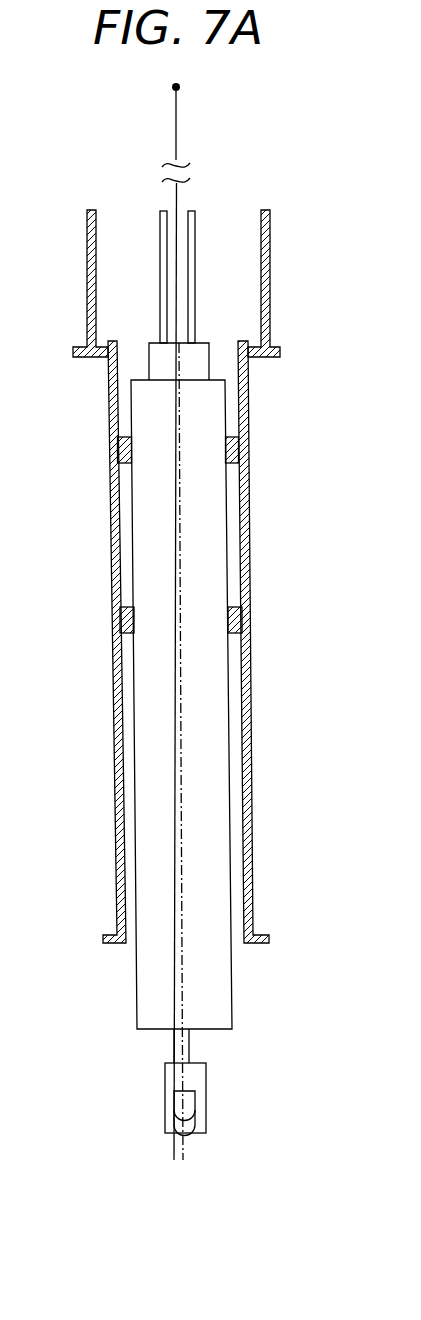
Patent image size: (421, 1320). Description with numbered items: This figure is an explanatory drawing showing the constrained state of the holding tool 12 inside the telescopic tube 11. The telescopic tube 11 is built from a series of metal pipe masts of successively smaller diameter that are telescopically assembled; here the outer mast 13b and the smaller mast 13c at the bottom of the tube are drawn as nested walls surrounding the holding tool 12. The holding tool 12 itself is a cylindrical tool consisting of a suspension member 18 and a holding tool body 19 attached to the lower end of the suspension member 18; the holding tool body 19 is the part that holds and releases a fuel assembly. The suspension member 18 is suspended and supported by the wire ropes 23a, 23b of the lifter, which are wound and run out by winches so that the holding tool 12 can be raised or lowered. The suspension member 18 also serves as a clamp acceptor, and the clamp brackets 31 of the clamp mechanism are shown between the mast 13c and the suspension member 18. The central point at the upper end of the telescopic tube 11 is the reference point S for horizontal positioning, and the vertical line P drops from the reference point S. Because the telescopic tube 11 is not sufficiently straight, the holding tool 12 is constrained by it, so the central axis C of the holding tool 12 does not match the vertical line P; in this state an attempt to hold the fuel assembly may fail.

The reference point S is at (180, 87).
The vertical line P is at (174, 794).
The central axis C is at (186, 982).
The telescopic tube 11 is at (300, 368).
The holding tool 12 is at (241, 1014).
The mast 13b is at (270, 232).
The mast 13c is at (251, 690).
The suspension member 18 is at (203, 760).
The holding tool body 19 is at (206, 1090).
The wire rope 23a is at (160, 297).
The wire rope 23b is at (194, 283).
The clamp bracket 31 is at (119, 436).